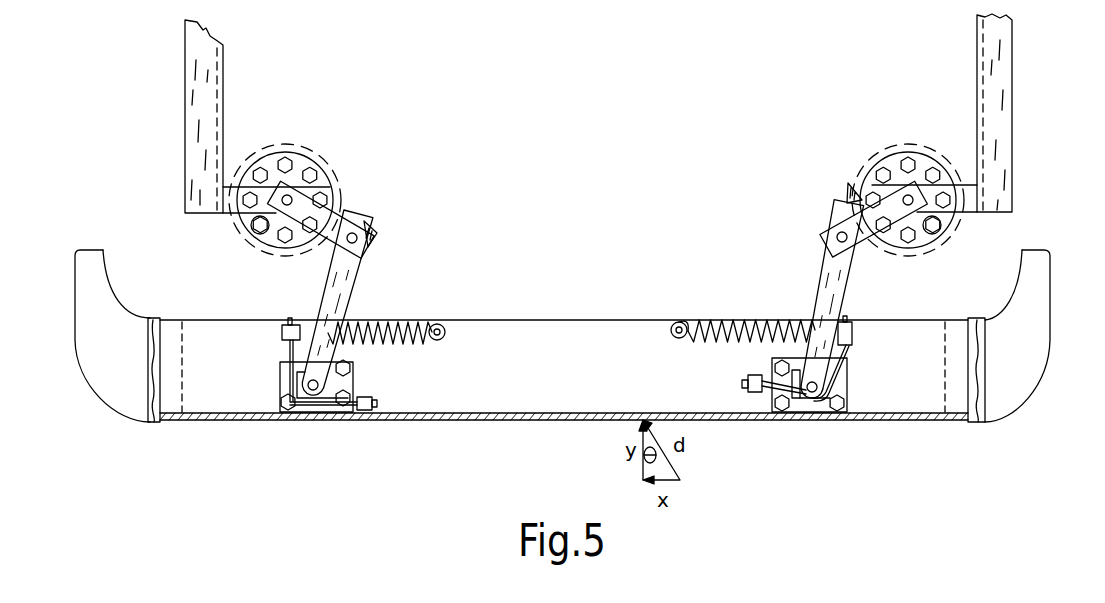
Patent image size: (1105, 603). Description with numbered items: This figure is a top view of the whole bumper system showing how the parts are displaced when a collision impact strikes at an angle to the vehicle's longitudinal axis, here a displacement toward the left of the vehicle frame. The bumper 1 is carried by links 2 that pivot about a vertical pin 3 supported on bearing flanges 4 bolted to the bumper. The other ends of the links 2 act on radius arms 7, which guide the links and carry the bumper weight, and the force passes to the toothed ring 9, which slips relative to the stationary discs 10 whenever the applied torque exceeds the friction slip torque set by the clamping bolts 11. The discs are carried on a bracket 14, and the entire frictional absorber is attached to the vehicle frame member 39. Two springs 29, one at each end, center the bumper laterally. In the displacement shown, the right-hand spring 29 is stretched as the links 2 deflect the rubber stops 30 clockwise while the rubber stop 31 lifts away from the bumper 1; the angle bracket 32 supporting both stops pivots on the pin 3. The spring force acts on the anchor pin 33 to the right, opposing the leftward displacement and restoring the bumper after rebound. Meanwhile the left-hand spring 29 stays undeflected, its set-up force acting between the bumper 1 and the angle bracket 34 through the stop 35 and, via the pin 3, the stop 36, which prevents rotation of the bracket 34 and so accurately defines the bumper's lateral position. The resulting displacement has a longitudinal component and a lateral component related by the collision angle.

The bumper 1 is at (447, 421).
The links 2 is at (322, 297).
The pin 3 is at (352, 384).
The bearing flanges 4 is at (280, 373).
The radius arms 7 is at (368, 238).
The toothed ring 9 is at (322, 152).
The stationary discs 10 is at (270, 148).
The bolts 11 is at (256, 233).
The bracket 14 is at (274, 222).
The springs 29 is at (402, 328).
The rubber stops 30 is at (853, 335).
The rubber stop 31 is at (750, 378).
The angle bracket 32 is at (798, 402).
The anchor pin 33 is at (445, 338).
The angle bracket 34 is at (312, 412).
The stop 35 is at (282, 330).
The stop 36 is at (378, 404).
The vehicle frame member 39 is at (185, 140).